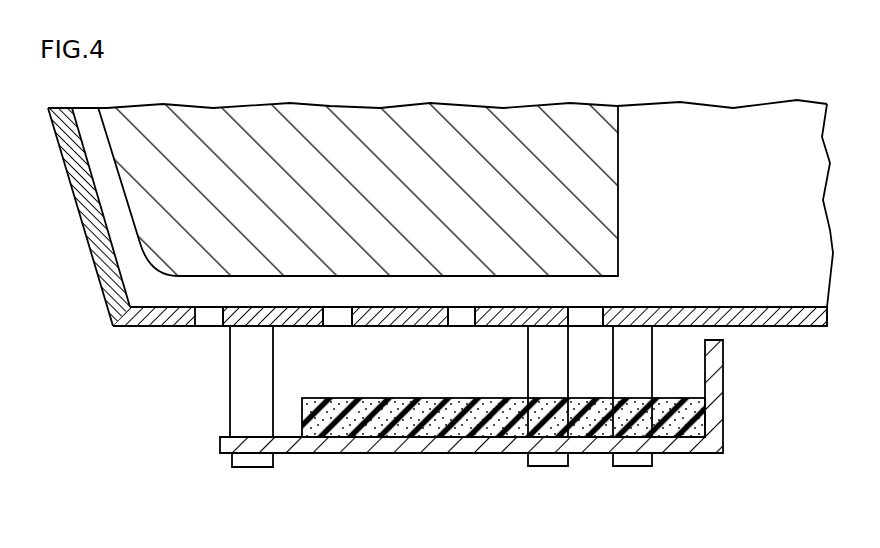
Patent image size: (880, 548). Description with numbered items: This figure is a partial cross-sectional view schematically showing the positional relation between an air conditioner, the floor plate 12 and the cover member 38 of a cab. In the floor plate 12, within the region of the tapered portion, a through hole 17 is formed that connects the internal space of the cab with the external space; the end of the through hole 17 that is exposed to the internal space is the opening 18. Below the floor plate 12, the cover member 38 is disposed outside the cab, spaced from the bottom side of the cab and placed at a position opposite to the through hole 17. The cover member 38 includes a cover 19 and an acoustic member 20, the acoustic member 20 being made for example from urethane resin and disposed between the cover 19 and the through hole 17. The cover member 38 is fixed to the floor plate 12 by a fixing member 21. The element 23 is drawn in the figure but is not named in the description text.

The floor plate 12 is at (780, 313).
The through hole 17 is at (203, 327).
The opening 18 is at (223, 307).
The cover 19 is at (712, 430).
The acoustic member 20 is at (697, 407).
The fixing member 21 is at (245, 393).
The potting resin 23 is at (465, 118).
The cover member 38 is at (797, 392).